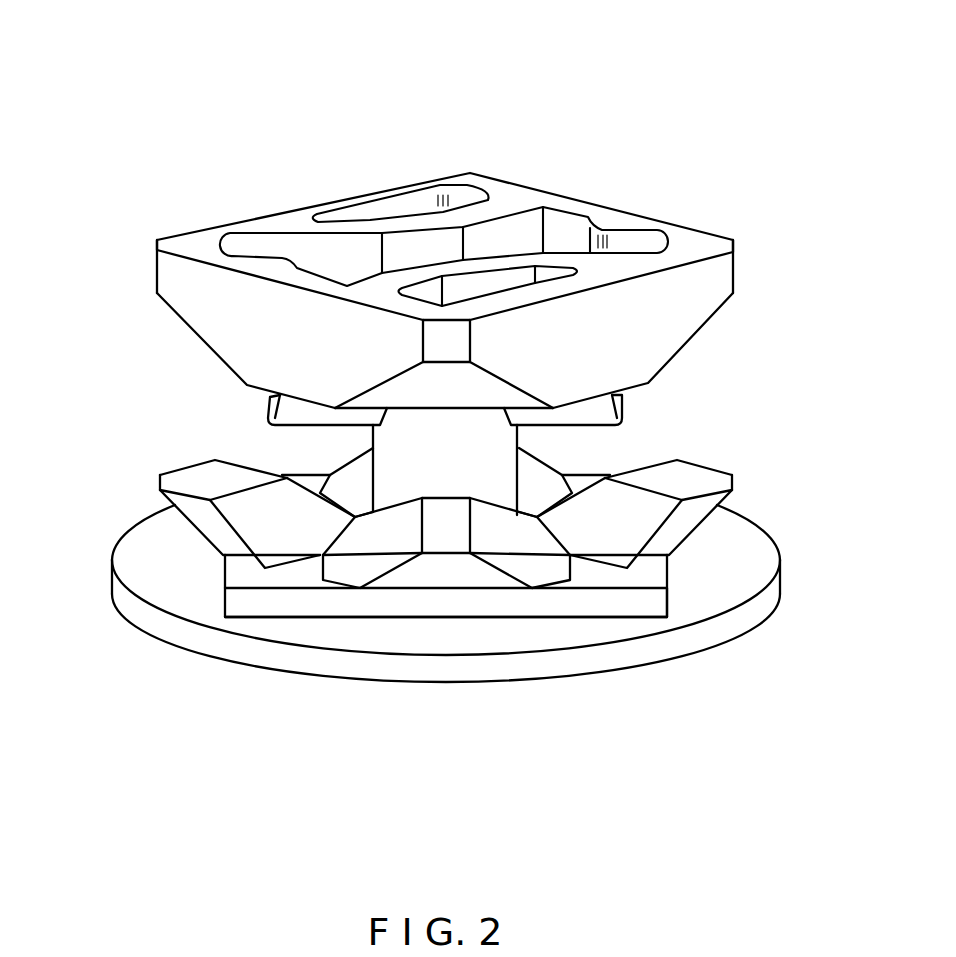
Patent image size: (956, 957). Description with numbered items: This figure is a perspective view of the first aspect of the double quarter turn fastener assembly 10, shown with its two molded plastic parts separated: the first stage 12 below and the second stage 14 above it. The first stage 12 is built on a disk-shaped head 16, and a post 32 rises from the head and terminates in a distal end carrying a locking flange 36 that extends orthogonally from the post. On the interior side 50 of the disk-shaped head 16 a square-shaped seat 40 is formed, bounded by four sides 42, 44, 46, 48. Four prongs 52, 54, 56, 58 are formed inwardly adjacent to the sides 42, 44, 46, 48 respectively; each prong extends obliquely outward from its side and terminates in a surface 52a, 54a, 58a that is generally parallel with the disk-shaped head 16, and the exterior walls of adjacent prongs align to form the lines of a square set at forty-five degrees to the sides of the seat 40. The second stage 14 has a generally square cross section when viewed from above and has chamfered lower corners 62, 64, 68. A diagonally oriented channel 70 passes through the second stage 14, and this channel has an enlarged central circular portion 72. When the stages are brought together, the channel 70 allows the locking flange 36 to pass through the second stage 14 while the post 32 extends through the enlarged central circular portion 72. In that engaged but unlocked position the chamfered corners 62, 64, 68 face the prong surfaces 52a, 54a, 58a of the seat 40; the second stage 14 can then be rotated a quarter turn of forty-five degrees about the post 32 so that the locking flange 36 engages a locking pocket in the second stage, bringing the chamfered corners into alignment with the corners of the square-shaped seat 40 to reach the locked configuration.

The fastener assembly 10 is at (800, 122).
The first stage 12 is at (767, 522).
The second stage 14 is at (745, 252).
The disk-shaped head 16 is at (705, 638).
The post 32 is at (522, 441).
The locking flange 36 is at (263, 412).
The square-shaped seat 40 is at (667, 603).
The side of seat 42 is at (547, 605).
The side of seat 44 is at (667, 575).
The side of seat 46 is at (593, 478).
The side of seat 48 is at (223, 577).
The interior side 50 is at (748, 562).
The prong 52 is at (420, 578).
The surface of prong 52a is at (452, 555).
The prong 54 is at (733, 498).
The surface of prong 54a is at (688, 470).
The prong 56 is at (342, 462).
The prong 58 is at (167, 508).
The surface of prong 58a is at (183, 475).
The chamfered lower corner 62 is at (427, 380).
The chamfered lower corner 64 is at (700, 333).
The chamfered lower corner 68 is at (167, 307).
The diagonally oriented channel 70 is at (620, 247).
The enlarged central circular portion 72 is at (413, 247).